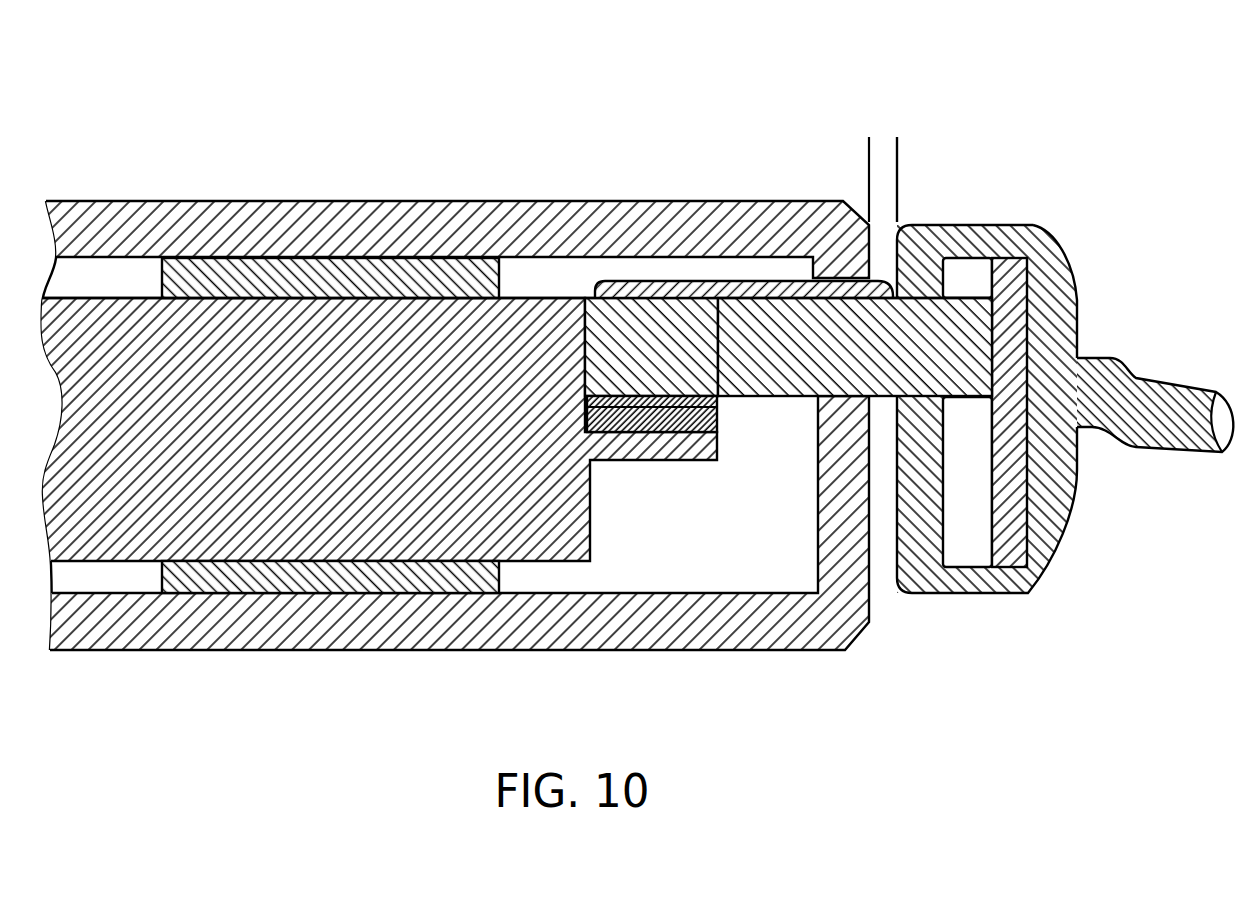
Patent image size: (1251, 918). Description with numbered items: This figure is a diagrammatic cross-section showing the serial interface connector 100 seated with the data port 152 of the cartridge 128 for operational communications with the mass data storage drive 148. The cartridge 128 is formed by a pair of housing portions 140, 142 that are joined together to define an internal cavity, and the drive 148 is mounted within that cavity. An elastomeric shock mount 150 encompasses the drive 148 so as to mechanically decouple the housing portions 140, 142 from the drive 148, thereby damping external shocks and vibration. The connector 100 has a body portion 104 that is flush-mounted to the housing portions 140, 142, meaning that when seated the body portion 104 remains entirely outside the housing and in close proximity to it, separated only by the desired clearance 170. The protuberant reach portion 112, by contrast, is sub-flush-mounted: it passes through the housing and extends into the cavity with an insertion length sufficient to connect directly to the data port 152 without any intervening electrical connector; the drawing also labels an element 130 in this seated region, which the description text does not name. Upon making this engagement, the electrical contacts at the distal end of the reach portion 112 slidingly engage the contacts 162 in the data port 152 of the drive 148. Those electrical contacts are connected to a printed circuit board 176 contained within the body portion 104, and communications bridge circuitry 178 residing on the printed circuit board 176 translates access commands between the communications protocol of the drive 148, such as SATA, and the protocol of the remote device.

The serial interface connector 100 is at (1110, 507).
The body portion 104 is at (983, 225).
The reach portion 112 is at (830, 332).
The cartridge 128 is at (178, 88).
The pin 130 is at (790, 298).
The housing portion 140 is at (150, 201).
The housing portion 142 is at (137, 647).
The mass data storage drive 148 is at (245, 517).
The elastomeric shock mount 150 is at (316, 280).
The data port 152 is at (665, 352).
The contacts 162 is at (720, 423).
The clearance 170 is at (937, 152).
The printed circuit board 176 is at (1000, 262).
The communications bridge circuitry 178 is at (1098, 430).